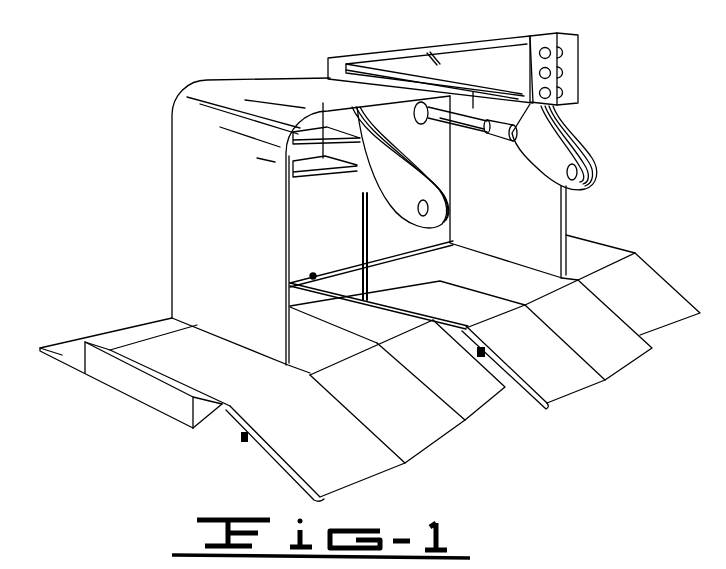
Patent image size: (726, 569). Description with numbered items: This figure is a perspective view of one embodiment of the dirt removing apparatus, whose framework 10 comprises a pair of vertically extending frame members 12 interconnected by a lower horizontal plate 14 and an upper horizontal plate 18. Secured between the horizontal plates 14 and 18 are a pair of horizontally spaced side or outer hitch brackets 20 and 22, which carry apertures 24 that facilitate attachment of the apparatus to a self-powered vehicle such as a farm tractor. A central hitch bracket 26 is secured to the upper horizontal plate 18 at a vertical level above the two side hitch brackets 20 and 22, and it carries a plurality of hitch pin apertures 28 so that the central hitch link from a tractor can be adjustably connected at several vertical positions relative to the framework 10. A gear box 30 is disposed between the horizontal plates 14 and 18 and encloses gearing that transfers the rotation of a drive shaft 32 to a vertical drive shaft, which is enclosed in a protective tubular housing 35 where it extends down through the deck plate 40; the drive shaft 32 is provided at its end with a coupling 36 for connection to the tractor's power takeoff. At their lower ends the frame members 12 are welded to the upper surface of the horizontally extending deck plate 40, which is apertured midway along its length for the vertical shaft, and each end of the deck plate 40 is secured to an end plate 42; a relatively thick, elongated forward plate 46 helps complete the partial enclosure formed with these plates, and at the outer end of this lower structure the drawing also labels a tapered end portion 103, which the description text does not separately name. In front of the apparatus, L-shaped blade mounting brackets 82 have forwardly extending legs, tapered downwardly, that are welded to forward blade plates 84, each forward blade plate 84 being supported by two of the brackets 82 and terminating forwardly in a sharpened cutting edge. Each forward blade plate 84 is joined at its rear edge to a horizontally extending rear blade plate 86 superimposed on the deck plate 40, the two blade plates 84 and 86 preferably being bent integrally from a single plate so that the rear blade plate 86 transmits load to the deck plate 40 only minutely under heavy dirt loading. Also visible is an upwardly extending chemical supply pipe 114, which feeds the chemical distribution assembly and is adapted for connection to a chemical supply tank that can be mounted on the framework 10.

The framework 10 is at (168, 152).
The vertically extending frame members 12 is at (224, 233).
The lower horizontal plate 14 is at (306, 174).
The upper horizontal plate 18 is at (357, 102).
The side hitch bracket 20 is at (395, 187).
The side hitch bracket 22 is at (551, 161).
The apertures 24 is at (437, 206).
The central hitch bracket 26 is at (536, 32).
The hitch pin apertures 28 is at (565, 54).
The gear box 30 is at (386, 123).
The drive shaft 32 is at (466, 120).
The protective tubular housing 35 is at (376, 265).
The coupling 36 is at (507, 136).
The deck plate 40 is at (104, 341).
The end plate 42 is at (117, 393).
The forward plate 46 is at (204, 426).
The L-shaped blade mounting bracket 82 is at (242, 440).
The forward blade plate 84 is at (298, 437).
The rear blade plate 86 is at (188, 375).
The tapered tip 103 is at (64, 356).
The chemical supply pipe 114 is at (313, 275).